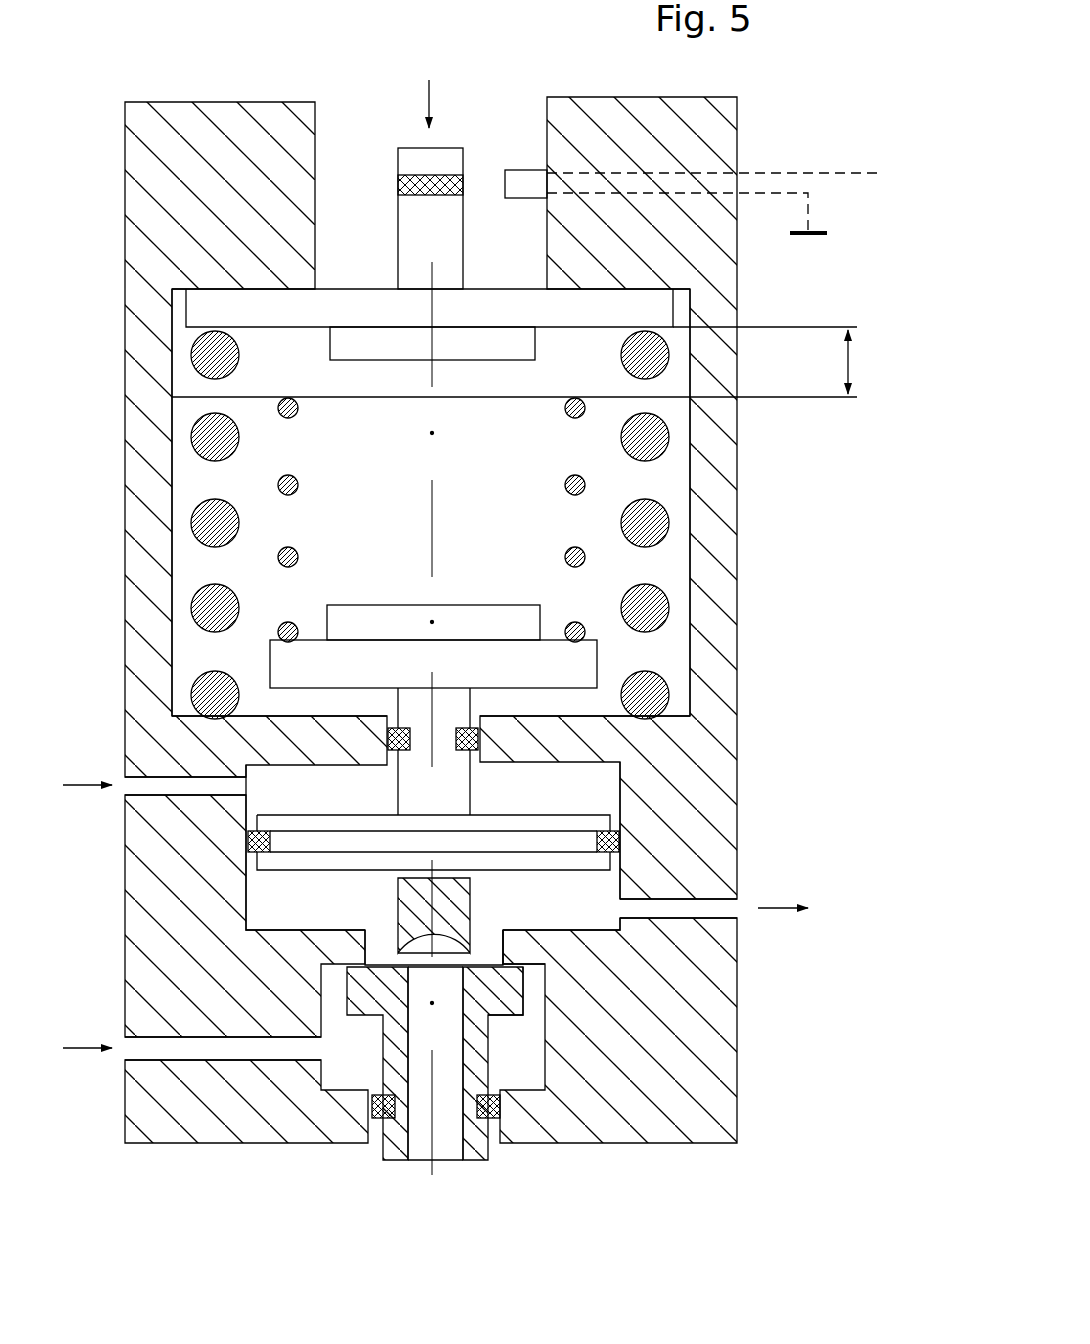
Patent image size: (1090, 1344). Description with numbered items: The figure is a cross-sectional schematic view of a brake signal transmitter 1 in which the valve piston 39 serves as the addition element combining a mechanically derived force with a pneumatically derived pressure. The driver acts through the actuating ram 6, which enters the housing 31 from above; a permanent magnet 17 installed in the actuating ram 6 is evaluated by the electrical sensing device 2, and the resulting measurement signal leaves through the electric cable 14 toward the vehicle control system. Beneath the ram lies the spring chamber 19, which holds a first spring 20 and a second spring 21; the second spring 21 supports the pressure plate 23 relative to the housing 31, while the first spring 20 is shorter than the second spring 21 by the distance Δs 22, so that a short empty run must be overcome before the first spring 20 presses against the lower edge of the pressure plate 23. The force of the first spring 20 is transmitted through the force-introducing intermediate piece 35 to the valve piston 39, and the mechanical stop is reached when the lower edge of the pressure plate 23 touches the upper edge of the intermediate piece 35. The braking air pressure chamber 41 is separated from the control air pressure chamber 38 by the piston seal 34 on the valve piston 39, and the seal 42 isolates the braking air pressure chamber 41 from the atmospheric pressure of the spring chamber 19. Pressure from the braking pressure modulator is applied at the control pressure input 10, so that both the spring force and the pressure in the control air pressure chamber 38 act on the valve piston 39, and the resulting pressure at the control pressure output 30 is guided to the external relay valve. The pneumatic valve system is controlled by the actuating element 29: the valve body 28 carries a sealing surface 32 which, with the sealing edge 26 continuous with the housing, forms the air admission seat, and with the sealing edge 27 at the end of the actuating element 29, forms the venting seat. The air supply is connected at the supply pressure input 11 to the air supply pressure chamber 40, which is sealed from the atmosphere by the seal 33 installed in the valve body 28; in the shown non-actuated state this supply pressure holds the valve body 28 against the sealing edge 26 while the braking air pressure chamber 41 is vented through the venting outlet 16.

The brake signal transmitter 1 is at (789, 100).
The sensing device 2 is at (530, 182).
The actuating ram 6 is at (415, 247).
The control pressure input 10 is at (162, 787).
The supply pressure input 11 is at (160, 1050).
The electric cable 14 is at (862, 174).
The venting outlet 16 is at (427, 1127).
The permanent magnet 17 is at (413, 147).
The spring chamber 19 is at (525, 440).
The first spring 20 is at (282, 405).
The second spring 21 is at (210, 355).
The distance Δs 22 is at (846, 345).
The pressure plate 23 is at (240, 308).
The sealing edge 26 is at (505, 955).
The sealing edge 27 is at (380, 962).
The valve body 28 is at (520, 1030).
The actuating element 29 is at (423, 873).
The control pressure output 30 is at (706, 905).
The housing 31 is at (190, 145).
The sealing surface 32 is at (383, 970).
The seal 33 is at (497, 1117).
The piston seal 34 is at (620, 836).
The force-introducing intermediate piece 35 is at (540, 660).
The control air pressure chamber 38 is at (532, 790).
The valve piston 39 is at (527, 830).
The air supply pressure chamber 40 is at (523, 998).
The braking air pressure chamber 41 is at (590, 890).
The seal 42 is at (388, 745).